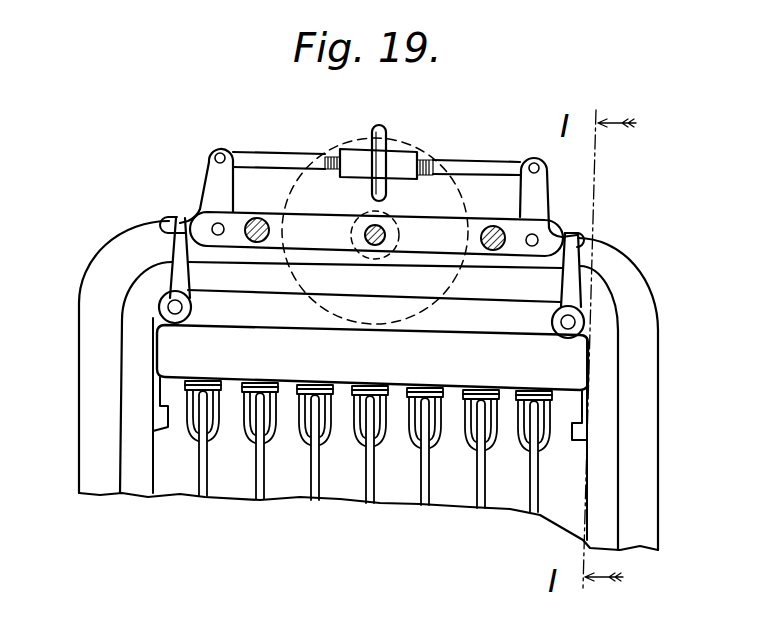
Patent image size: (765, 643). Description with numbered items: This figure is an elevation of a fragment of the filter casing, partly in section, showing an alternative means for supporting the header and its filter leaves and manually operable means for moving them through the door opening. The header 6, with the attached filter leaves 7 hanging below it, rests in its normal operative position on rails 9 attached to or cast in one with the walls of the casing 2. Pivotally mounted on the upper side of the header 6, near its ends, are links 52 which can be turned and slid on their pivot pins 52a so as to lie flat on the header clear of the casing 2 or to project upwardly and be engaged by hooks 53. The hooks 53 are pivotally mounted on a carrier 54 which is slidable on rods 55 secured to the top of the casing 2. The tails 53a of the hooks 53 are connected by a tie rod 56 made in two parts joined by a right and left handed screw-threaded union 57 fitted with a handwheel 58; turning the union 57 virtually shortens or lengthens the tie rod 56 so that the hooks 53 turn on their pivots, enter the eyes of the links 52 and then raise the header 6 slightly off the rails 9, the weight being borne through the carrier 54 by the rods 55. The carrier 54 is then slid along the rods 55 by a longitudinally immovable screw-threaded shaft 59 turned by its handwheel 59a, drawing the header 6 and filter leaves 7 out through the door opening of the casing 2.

The casing 2 is at (677, 443).
The header 6 is at (372, 357).
The filter leaves 7 is at (423, 496).
The rails 9 is at (160, 424).
The links 52 is at (170, 277).
The pivot pins 52a is at (187, 305).
The hooks 53 is at (160, 223).
The tails 53a is at (212, 184).
The carrier 54 is at (376, 231).
The rods 55 is at (258, 218).
The tie rod 56 is at (248, 157).
The screw-threaded union 57 is at (402, 158).
The handwheel 58 is at (372, 192).
The screw-threaded shaft 59 is at (387, 235).
The handwheel 59a is at (438, 182).